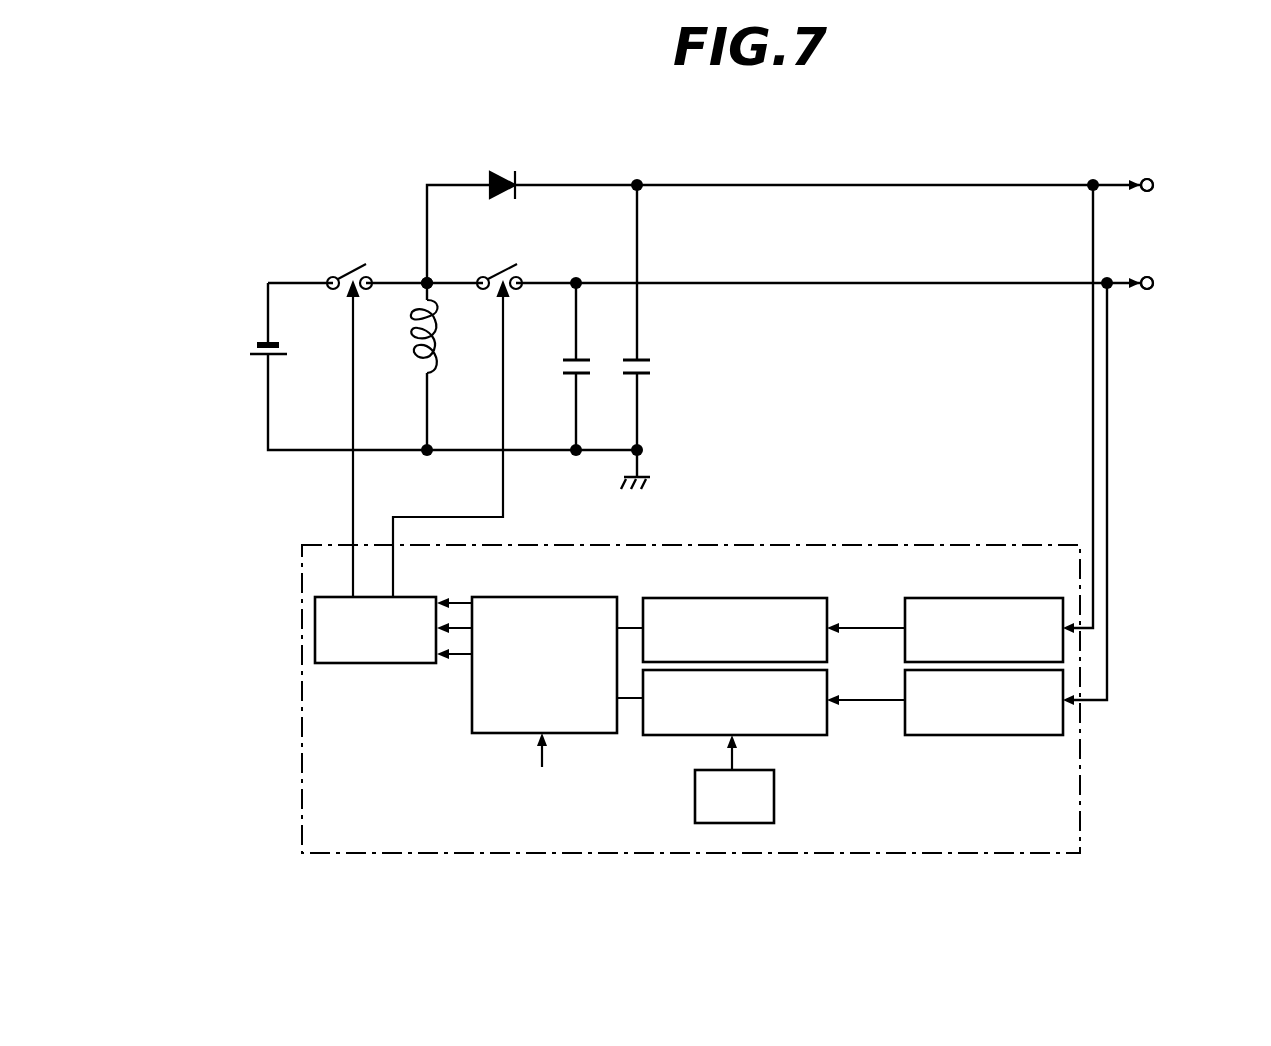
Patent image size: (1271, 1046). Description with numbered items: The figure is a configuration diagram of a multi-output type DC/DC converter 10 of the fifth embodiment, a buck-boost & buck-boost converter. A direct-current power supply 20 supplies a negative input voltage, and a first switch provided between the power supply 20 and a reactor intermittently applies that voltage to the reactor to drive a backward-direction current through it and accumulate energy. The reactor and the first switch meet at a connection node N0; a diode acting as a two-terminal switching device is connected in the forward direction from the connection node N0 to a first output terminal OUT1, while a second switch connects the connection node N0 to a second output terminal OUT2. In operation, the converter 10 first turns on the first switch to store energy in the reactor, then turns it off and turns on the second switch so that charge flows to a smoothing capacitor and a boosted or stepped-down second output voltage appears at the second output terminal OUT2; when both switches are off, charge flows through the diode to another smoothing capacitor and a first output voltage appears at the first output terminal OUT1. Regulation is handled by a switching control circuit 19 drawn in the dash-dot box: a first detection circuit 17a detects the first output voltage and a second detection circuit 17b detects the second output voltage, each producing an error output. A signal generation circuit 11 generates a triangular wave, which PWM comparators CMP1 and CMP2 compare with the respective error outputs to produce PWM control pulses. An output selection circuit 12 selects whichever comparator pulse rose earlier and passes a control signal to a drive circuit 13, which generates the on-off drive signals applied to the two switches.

The multi-output type DC/DC converter 10 is at (796, 140).
The signal generation circuit 11 is at (774, 794).
The output selection circuit 12 is at (470, 713).
The drive circuit 13 is at (341, 664).
The first detection circuit 17a is at (987, 598).
The second detection circuit 17b is at (990, 736).
The switching control circuit 19 is at (1080, 770).
The direct-current power supply 20 is at (262, 360).
The connection node N0 is at (425, 280).
The PWM comparator CMP1 is at (762, 598).
The PWM comparator CMP2 is at (797, 737).
The first output terminal OUT1 is at (1150, 180).
The second output terminal OUT2 is at (1152, 289).